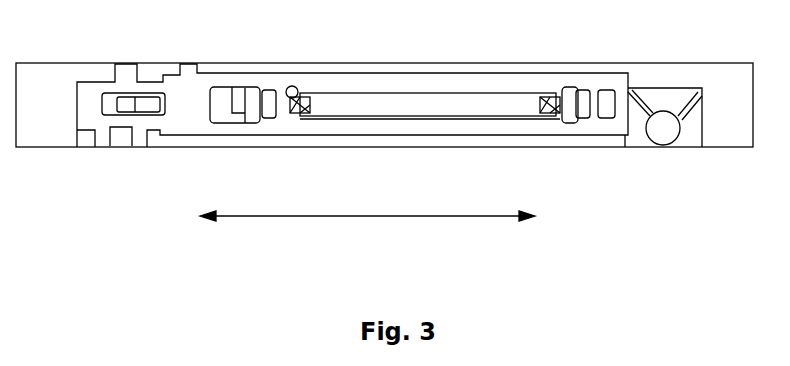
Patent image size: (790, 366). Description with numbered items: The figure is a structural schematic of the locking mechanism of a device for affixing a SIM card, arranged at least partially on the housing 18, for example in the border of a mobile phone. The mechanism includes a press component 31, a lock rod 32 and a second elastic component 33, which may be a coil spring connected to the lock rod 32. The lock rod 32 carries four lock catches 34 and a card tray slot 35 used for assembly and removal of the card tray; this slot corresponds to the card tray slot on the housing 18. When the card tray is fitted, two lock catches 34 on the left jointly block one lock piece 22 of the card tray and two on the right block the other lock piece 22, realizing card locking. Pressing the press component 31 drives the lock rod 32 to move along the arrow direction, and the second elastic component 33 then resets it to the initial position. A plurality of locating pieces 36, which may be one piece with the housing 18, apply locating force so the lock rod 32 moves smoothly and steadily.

The housing 18 is at (722, 73).
The lock piece 22 is at (560, 110).
The press component 31 is at (148, 103).
The lock rod 32 is at (232, 78).
The second elastic component 33 is at (675, 127).
The lock catch 34 is at (295, 90).
The card tray slot 35 is at (438, 100).
The locating piece 36 is at (250, 108).